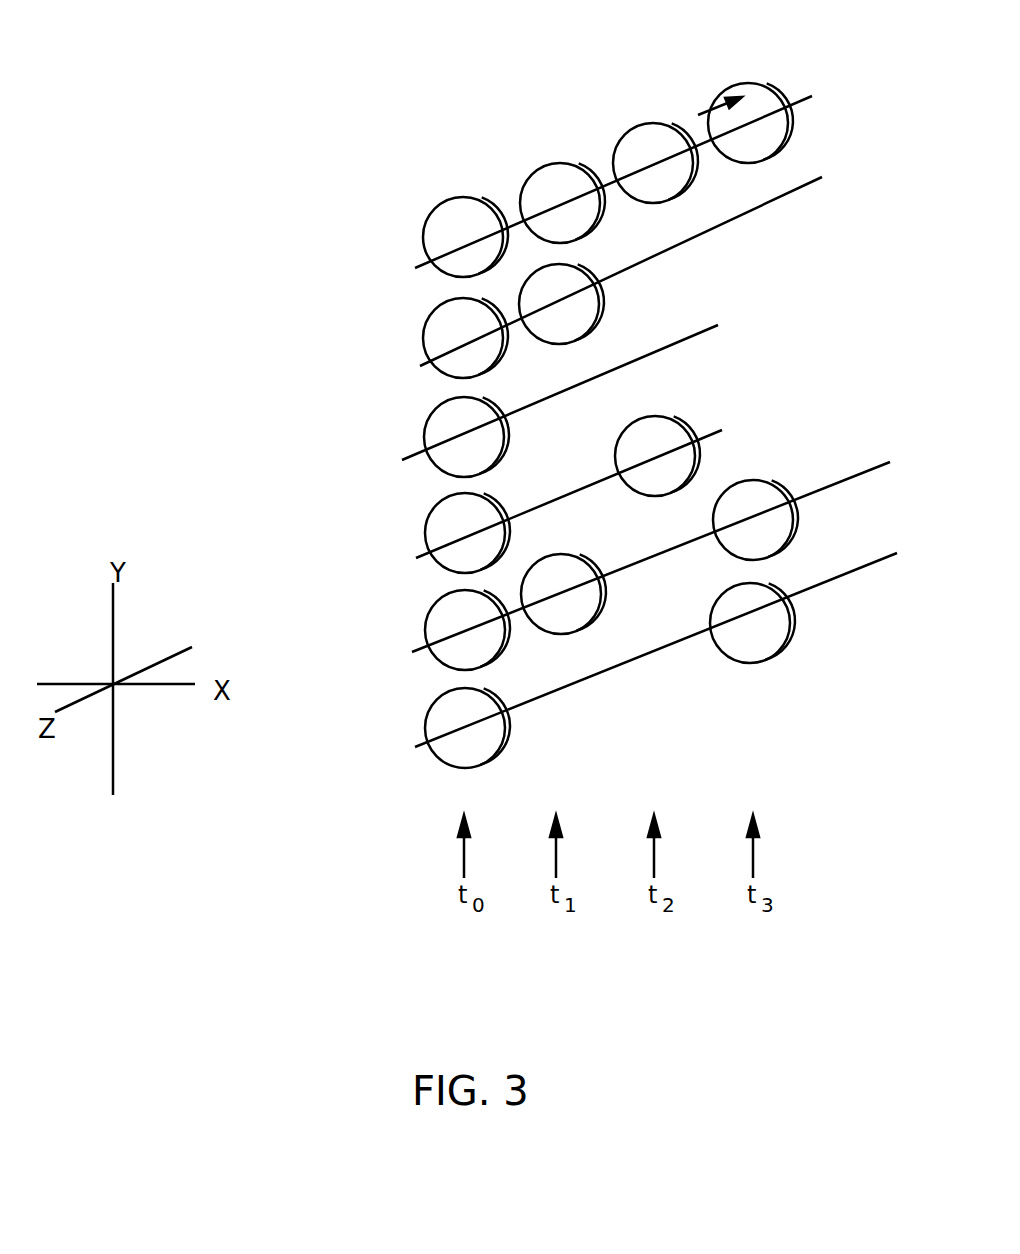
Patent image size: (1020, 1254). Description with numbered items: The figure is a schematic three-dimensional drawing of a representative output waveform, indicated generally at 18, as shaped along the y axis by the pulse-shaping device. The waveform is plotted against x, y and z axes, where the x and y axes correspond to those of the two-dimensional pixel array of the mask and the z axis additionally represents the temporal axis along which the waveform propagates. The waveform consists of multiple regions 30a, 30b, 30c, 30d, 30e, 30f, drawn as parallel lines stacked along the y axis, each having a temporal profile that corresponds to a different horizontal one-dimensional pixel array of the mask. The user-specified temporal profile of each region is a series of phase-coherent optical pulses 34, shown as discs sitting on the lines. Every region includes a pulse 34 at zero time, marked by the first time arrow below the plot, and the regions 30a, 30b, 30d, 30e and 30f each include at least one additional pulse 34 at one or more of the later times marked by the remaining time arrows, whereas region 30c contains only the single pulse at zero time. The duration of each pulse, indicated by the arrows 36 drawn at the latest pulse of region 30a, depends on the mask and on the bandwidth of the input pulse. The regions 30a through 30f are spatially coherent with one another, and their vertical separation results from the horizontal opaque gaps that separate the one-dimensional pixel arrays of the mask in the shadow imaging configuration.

The array of elements 18 is at (330, 64).
The region of the output waveform 30a is at (375, 283).
The region of the output waveform 30b is at (392, 384).
The region of the output waveform 30c is at (390, 468).
The region of the output waveform 30d is at (390, 573).
The region of the output waveform 30e is at (393, 659).
The region of the output waveform 30f is at (398, 758).
The phase-coherent optical pulse 34 is at (463, 198).
The arrows indicating pulse duration 36 is at (788, 81).